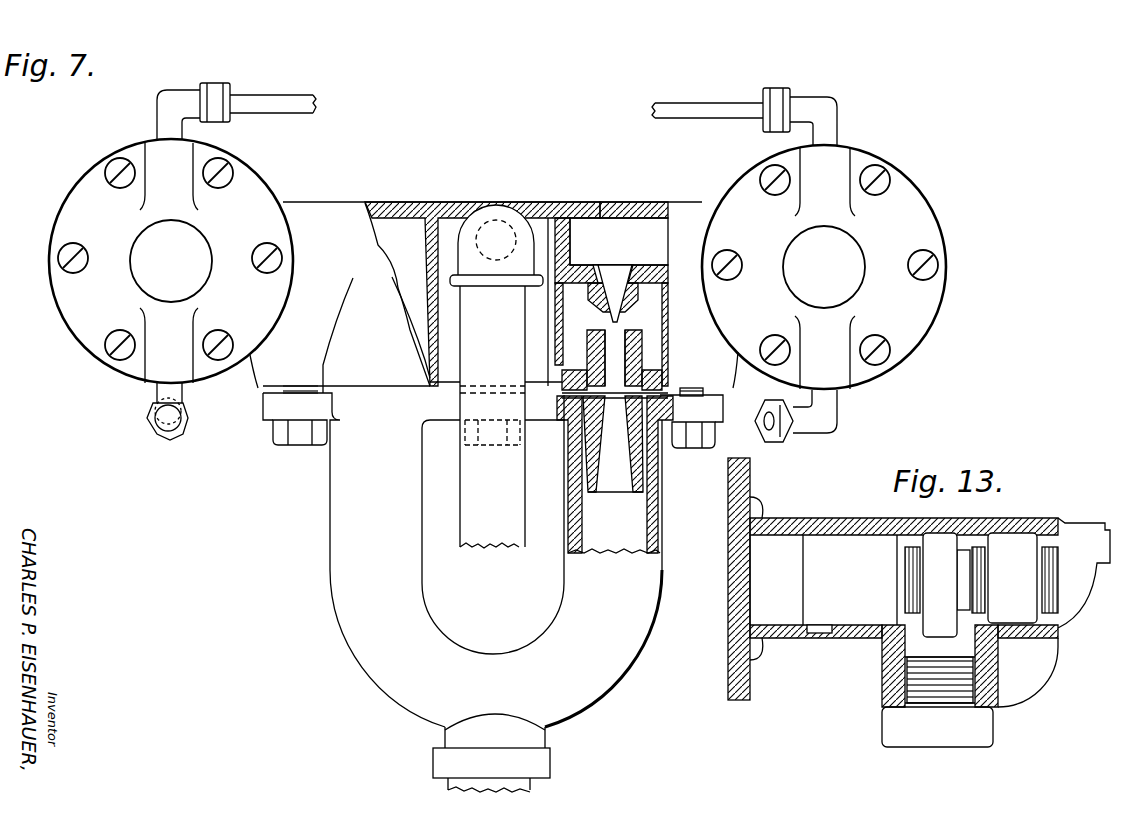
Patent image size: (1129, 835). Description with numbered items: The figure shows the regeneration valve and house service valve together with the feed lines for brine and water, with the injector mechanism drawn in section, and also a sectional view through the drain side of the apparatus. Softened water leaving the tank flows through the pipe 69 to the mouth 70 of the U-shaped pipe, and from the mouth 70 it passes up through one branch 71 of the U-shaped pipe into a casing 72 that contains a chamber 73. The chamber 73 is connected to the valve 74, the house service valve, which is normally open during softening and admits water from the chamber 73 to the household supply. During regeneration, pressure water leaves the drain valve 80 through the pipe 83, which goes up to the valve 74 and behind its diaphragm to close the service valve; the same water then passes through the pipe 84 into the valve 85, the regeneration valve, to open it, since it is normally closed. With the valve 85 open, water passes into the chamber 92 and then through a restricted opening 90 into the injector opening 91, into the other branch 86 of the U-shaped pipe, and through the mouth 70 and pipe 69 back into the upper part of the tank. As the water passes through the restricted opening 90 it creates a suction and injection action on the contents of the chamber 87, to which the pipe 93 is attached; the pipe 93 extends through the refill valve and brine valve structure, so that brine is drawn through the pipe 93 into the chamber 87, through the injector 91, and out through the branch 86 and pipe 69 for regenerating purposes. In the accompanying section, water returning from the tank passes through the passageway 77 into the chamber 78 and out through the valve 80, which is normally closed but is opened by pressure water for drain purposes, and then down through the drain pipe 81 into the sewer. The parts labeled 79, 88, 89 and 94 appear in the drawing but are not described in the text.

In FIG. 7, the pipe 69 is at (530, 787).
In FIG. 7, the mouth of the U-shaped pipe 70 is at (433, 758).
In FIG. 7, the branch of the U-shaped pipe 71 is at (343, 560).
In FIG. 7, the casing 72 is at (420, 211).
In FIG. 7, the chamber 73 is at (400, 250).
In FIG. 7, the valve 74 is at (60, 201).
In FIG. 13, the passageway 77 is at (1012, 578).
In FIG. 13, the chamber 78 is at (940, 585).
In FIG. 13, the threaded seat 79 is at (970, 590).
In FIG. 13, the valve 80 is at (750, 479).
In FIG. 13, the drain pipe 81 is at (962, 708).
In FIG. 7, the pipe 83 is at (147, 424).
In FIG. 7, the pipe 84 is at (258, 106).
In FIG. 7, the valve 85 is at (930, 226).
In FIG. 7, the branch of the U-shaped pipe 86 is at (598, 690).
In FIG. 7, the chamber 87 is at (650, 354).
In FIG. 7, the top wall 88 is at (660, 208).
In FIG. 7, the partition wall 89 is at (566, 258).
In FIG. 7, the restricted opening 90 is at (633, 306).
In FIG. 7, the injector opening 91 is at (618, 468).
In FIG. 7, the chamber 92 is at (618, 235).
In FIG. 7, the pipe 93 is at (503, 538).
In FIG. 7, the cap 94 is at (516, 212).